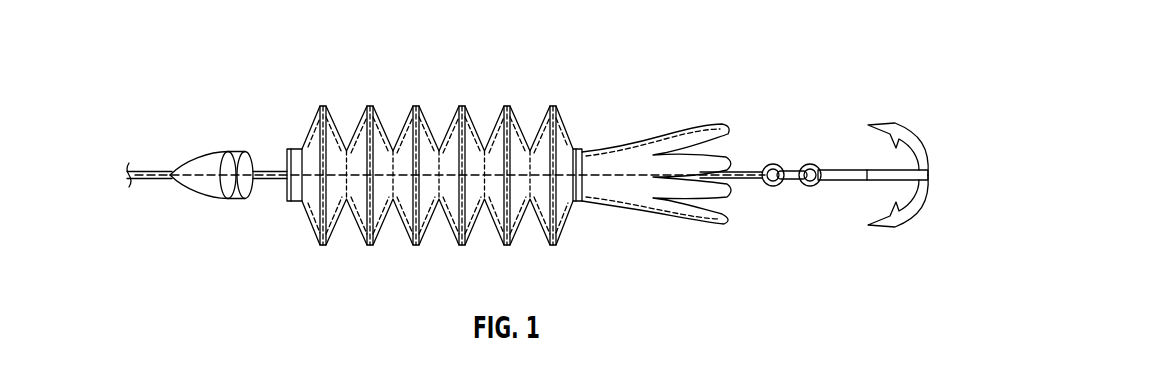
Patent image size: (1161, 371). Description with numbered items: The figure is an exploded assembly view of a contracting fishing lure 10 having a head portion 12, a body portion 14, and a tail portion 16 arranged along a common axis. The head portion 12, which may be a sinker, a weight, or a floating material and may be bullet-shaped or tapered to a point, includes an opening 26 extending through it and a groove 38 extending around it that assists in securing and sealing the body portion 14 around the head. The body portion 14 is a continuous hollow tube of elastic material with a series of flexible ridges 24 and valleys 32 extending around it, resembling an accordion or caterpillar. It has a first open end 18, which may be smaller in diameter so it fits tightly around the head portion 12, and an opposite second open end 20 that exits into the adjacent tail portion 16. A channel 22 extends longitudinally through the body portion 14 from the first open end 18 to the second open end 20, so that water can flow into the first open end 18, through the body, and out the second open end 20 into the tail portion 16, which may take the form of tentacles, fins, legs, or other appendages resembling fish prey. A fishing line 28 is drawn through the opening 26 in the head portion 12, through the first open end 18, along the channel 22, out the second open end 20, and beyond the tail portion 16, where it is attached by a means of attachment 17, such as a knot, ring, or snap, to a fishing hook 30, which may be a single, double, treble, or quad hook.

The contracting fishing lure 10 is at (750, 43).
The head portion 12 is at (212, 153).
The body portion 14 is at (414, 164).
The tail portion 16 is at (653, 140).
The means of attachment 17 is at (775, 163).
The first open end 18 is at (287, 196).
The second open end 20 is at (592, 190).
The channel 22 is at (282, 162).
The flexible ridges 24 is at (370, 106).
The opening 26 is at (156, 180).
The fishing line 28 is at (150, 171).
The fishing hook 30 is at (872, 123).
The valleys 32 is at (346, 201).
The groove 38 is at (232, 151).